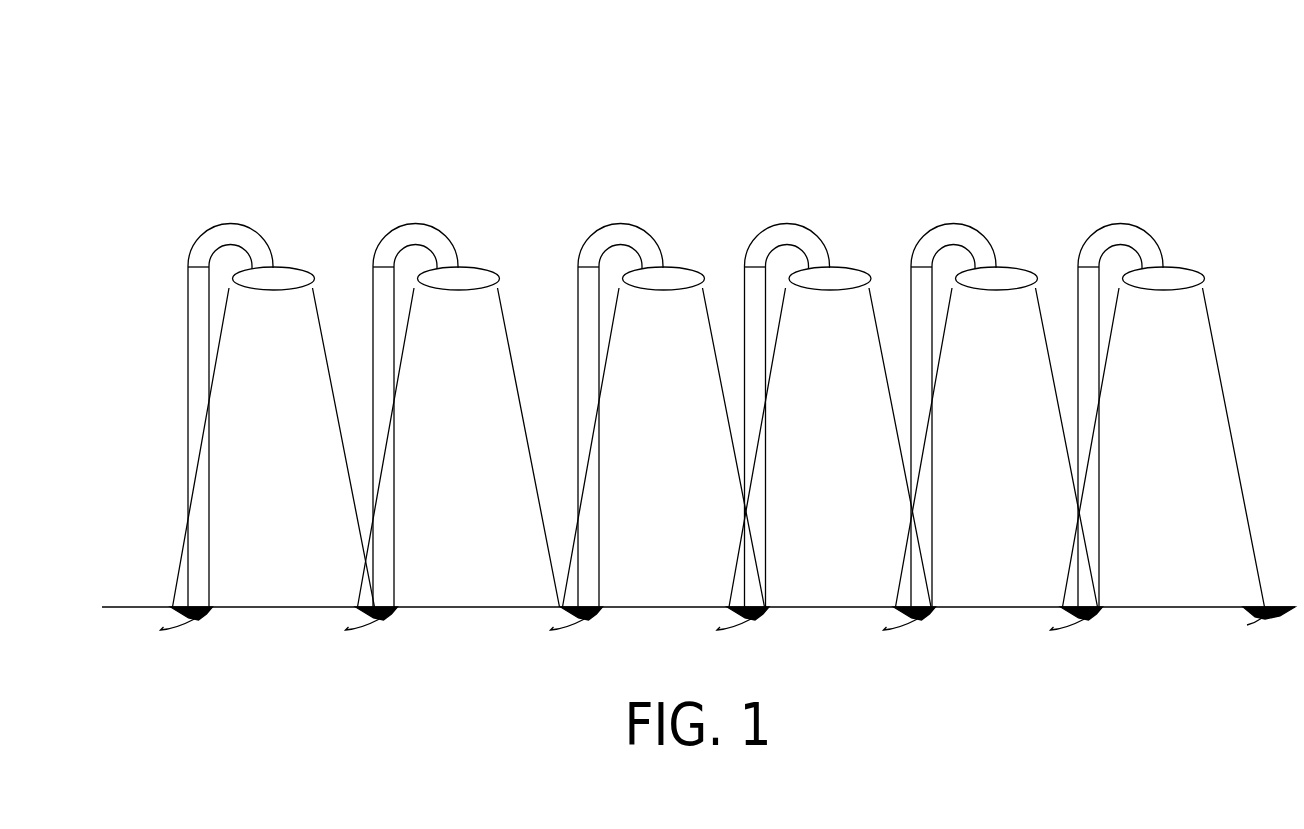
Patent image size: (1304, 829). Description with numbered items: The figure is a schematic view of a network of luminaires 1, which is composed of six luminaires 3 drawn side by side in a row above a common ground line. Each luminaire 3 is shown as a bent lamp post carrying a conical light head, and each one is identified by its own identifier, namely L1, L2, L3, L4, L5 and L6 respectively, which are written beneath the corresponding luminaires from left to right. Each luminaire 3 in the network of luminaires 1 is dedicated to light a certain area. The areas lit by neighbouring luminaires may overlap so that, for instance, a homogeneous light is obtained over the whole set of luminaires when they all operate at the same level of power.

The network of luminaires 1 is at (1090, 94).
The luminaire 3 is at (278, 237).
The identifier of the first luminaire L1 is at (268, 459).
The identifier of the second luminaire L2 is at (453, 459).
The identifier of the third luminaire L3 is at (658, 459).
The identifier of the fourth luminaire L4 is at (824, 459).
The identifier of the fifth luminaire L5 is at (991, 459).
The identifier of the sixth luminaire L6 is at (1173, 459).